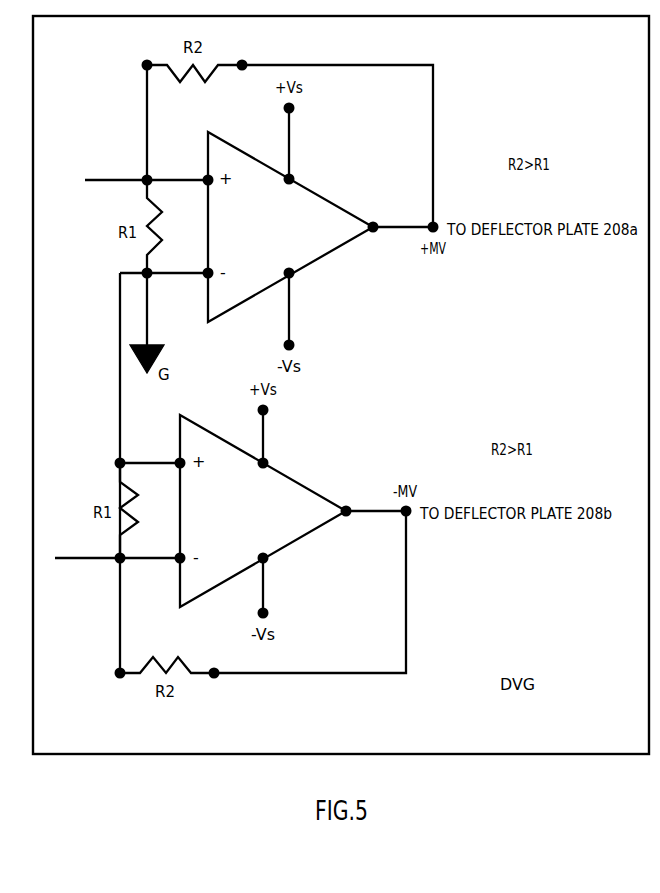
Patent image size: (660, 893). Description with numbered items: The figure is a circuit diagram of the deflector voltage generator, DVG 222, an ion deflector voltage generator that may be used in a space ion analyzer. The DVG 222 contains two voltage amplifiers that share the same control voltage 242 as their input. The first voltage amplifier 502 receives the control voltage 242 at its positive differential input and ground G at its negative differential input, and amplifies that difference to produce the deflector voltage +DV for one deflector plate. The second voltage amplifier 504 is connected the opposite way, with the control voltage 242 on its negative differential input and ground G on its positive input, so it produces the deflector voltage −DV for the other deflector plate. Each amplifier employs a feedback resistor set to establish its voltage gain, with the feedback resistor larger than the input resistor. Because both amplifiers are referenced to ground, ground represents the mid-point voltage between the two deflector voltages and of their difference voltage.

The deflector voltage generator (DVG) 222 is at (522, 755).
The control voltage 242 is at (118, 180).
The first voltage amplifier 502 is at (269, 238).
The second voltage amplifier 504 is at (247, 524).